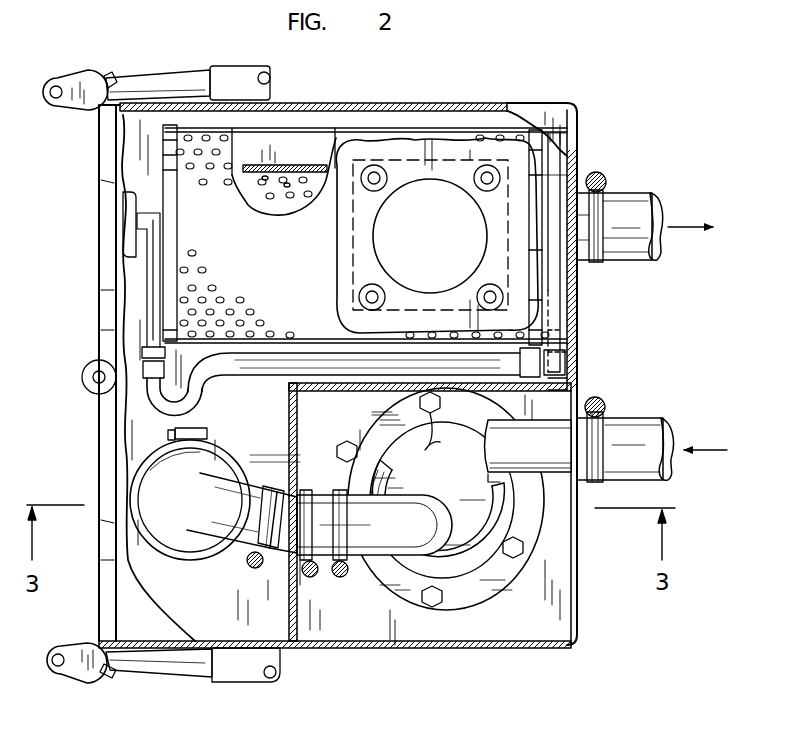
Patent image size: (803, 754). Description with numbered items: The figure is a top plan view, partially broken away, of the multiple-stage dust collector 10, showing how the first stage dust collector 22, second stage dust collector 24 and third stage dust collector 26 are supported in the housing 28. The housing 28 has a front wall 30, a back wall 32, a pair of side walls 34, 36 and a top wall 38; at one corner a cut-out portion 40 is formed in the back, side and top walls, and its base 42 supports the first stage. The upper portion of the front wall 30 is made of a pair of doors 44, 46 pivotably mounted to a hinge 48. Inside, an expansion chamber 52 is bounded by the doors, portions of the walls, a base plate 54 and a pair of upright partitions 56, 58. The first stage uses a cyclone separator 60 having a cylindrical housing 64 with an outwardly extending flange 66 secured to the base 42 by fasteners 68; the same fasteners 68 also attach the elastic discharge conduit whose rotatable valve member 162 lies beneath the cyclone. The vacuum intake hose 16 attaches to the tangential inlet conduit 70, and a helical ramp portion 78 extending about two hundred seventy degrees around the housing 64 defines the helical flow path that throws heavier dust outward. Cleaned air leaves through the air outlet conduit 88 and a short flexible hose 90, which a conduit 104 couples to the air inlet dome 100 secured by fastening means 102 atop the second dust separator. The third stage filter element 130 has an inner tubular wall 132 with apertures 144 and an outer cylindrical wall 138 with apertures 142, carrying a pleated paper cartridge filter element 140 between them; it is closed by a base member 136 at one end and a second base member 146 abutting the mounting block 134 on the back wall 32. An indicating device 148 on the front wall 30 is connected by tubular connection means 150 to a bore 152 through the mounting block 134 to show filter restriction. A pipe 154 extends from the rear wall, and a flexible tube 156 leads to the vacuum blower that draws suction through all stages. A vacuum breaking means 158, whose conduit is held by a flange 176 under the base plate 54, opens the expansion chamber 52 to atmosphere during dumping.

The multiple-stage dust collector 10 is at (615, 137).
The vacuum intake hose 16 is at (656, 423).
The first stage dust collector 22 is at (467, 555).
The second stage dust collector 24 is at (130, 483).
The third stage dust collector 26 is at (372, 132).
The housing 28 is at (376, 650).
The front wall 30 is at (99, 325).
The back wall 32 is at (578, 346).
The side wall 34 is at (452, 104).
The side wall 36 is at (432, 650).
The top wall 38 is at (547, 112).
The cut-out portion 40 is at (555, 395).
The base 42 is at (545, 597).
The door 44 is at (108, 292).
The door 46 is at (108, 541).
The hinge 48 is at (90, 388).
The expansion chamber 52 is at (240, 612).
The base plate 54 is at (134, 158).
The upright partition 56 is at (296, 420).
The upright partition 58 is at (352, 392).
The cyclone separator 60 is at (545, 536).
The cylindrical housing 64 is at (497, 452).
The outwardly extending flange 66 is at (575, 570).
The fasteners 68 is at (352, 453).
The tangential inlet conduit 70 is at (560, 467).
The helical ramp portion 78 is at (415, 572).
The air outlet conduit 88 is at (405, 525).
The flexible hose 90 is at (330, 500).
The air inlet dome 100 is at (148, 511).
The fastening means 102 is at (205, 428).
The conduit 104 is at (286, 548).
The filter element 130 is at (400, 135).
The inner tubular wall 132 is at (280, 208).
The mounting block 134 is at (555, 175).
The base member 136 is at (170, 125).
The outer cylindrical wall 138 is at (347, 133).
The pleated paper cartridge filter element 140 is at (272, 152).
The apertures 142 is at (222, 132).
The apertures 144 is at (268, 204).
The second base member 146 is at (540, 130).
The indicating device 148 is at (100, 230).
The tubular connection means 150 is at (264, 358).
The bore 152 is at (562, 312).
The pipe 154 is at (582, 258).
The flexible tube 156 is at (648, 197).
The vacuum breaking means 158 is at (348, 260).
The rotatable valve member 162 is at (450, 262).
The flange 176 is at (352, 235).